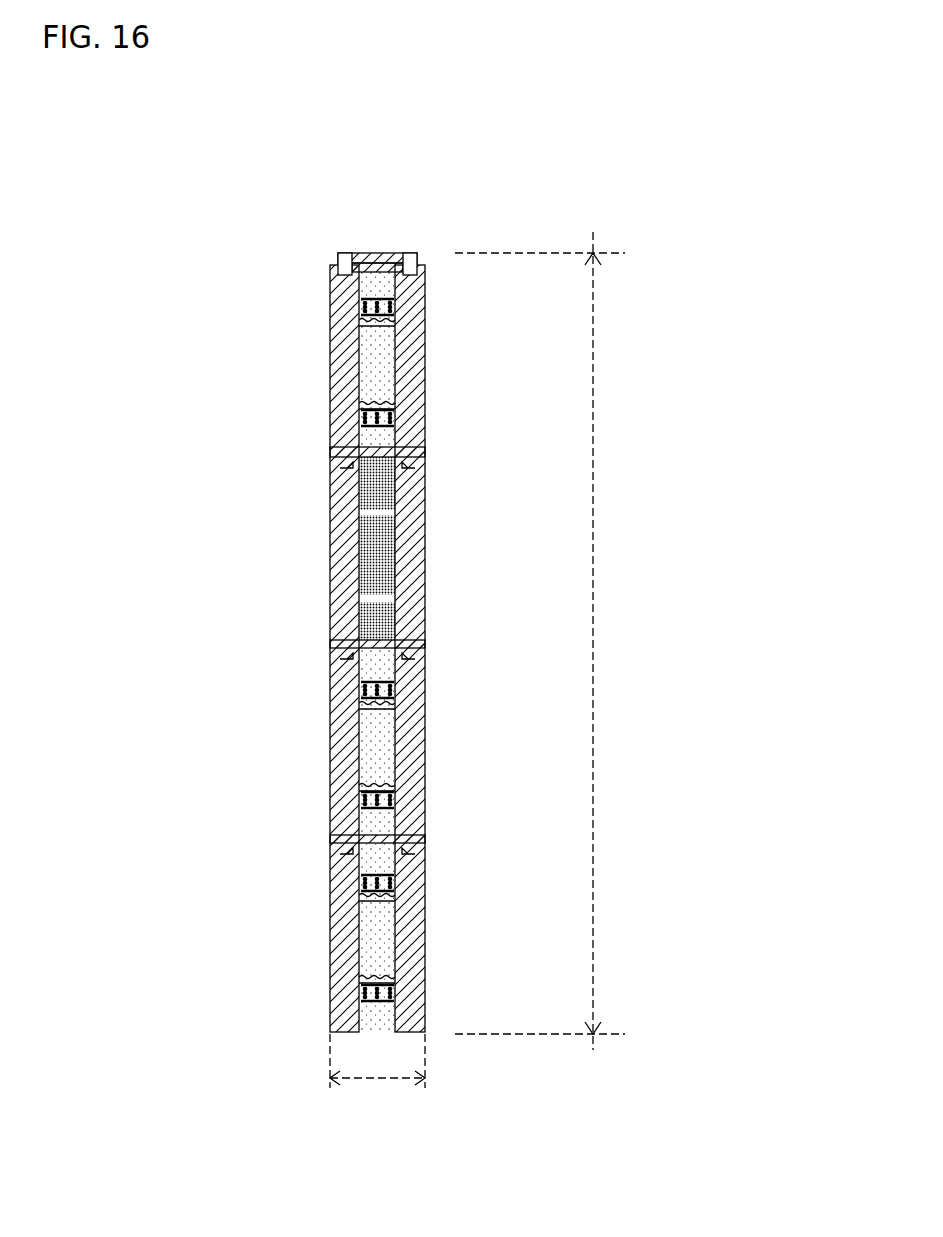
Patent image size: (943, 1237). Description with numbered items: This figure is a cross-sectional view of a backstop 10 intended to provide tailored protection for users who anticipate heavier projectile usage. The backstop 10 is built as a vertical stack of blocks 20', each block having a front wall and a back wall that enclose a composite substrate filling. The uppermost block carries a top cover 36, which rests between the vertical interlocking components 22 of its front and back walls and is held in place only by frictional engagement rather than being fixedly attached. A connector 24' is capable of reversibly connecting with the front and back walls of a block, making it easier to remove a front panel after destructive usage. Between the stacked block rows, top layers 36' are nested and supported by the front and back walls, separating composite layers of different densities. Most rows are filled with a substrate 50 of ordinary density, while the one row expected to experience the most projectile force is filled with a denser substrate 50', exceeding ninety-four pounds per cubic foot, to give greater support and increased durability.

The backstop 10 is at (556, 164).
The block 20' is at (328, 648).
The vertical interlocking component 22 is at (411, 252).
The connector 24' is at (426, 364).
The top cover 36 is at (377, 222).
The top layer 36' is at (336, 621).
The substrate 50 is at (425, 638).
The substrate 50' is at (426, 548).